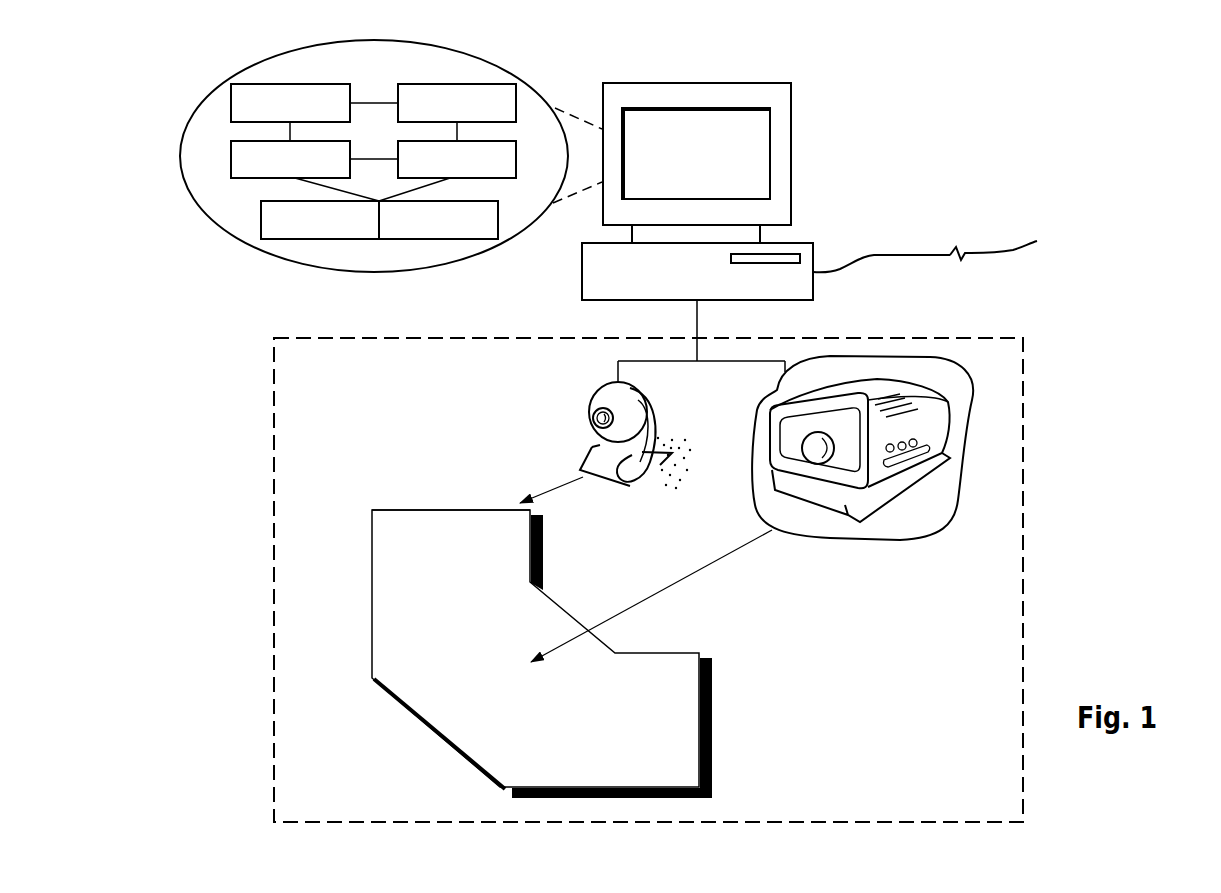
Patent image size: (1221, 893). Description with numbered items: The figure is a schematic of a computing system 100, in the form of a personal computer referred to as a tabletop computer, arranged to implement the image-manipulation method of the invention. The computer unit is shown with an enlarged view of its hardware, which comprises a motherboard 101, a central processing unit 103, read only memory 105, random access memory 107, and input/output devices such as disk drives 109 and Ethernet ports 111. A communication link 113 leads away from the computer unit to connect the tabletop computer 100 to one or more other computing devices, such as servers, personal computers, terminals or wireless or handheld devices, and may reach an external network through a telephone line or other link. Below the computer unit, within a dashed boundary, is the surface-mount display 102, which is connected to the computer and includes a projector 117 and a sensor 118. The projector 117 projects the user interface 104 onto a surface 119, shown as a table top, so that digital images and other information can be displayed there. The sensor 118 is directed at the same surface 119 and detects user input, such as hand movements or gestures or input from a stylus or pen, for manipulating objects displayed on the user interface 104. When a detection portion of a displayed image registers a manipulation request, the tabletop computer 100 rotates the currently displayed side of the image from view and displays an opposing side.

The computing system 100 is at (1020, 148).
The motherboard 101 is at (290, 103).
The surface-mount display 102 is at (1025, 402).
The central processing unit 103 is at (457, 103).
The user interface 104 is at (660, 745).
The read only memory (ROM) 105 is at (290, 159).
The random access memory (RAM) 107 is at (457, 159).
The disk drives 109 is at (320, 220).
The Ethernet ports 111 is at (438, 220).
The communication links 113 is at (874, 251).
The projector 117 is at (937, 488).
The sensor 118 is at (559, 420).
The surface 119 is at (416, 503).